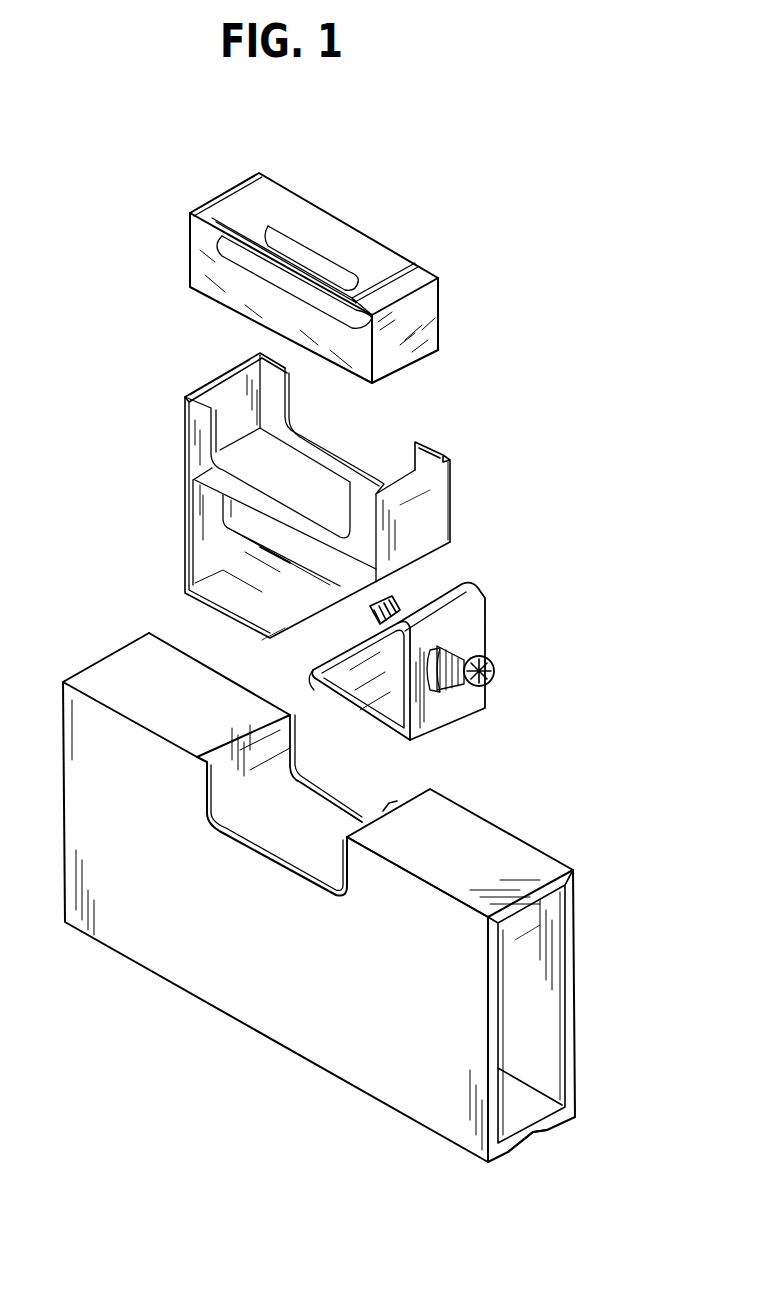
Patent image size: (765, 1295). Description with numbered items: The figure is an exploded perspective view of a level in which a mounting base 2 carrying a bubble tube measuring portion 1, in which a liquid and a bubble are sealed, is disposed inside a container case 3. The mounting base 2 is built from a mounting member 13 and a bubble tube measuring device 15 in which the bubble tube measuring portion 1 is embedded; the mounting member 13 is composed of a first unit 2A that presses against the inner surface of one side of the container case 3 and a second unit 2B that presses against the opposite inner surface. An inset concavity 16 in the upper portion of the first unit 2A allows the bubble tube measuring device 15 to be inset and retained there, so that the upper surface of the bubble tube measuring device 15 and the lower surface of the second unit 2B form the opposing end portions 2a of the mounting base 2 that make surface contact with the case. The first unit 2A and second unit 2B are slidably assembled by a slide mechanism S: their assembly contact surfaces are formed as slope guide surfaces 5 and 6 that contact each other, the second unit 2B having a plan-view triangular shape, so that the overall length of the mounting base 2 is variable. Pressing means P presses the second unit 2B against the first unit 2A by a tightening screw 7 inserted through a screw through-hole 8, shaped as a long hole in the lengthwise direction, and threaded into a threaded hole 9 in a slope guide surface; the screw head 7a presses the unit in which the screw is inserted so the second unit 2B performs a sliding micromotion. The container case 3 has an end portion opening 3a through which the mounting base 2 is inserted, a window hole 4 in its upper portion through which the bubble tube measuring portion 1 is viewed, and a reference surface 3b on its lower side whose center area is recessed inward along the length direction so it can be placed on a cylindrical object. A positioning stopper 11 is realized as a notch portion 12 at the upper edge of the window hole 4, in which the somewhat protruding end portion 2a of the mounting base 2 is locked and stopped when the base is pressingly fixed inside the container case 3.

The bubble tube measuring portion 1 is at (280, 232).
The mounting base 2 is at (433, 487).
The end portion 2a is at (383, 252).
The first unit 2A is at (430, 507).
The second unit 2B is at (473, 622).
The container case 3 is at (520, 868).
The end portion opening 3a is at (547, 990).
The reference surface 3b is at (507, 1155).
The window hole 4 is at (237, 842).
The slope guide surface 5 is at (280, 640).
The slope guide surface 6 is at (326, 656).
The tightening screw 7 is at (467, 647).
The screw head 7a is at (487, 680).
The screw through-hole 8 is at (463, 693).
The threaded hole 9 is at (228, 537).
The positioning stopper 11 is at (217, 748).
The notch portion 12 is at (389, 803).
The mounting member 13 is at (427, 530).
The bubble tube measuring device 15 is at (430, 317).
The inset concavity 16 is at (223, 395).
The pressing means P is at (478, 730).
The slide mechanism S is at (316, 651).